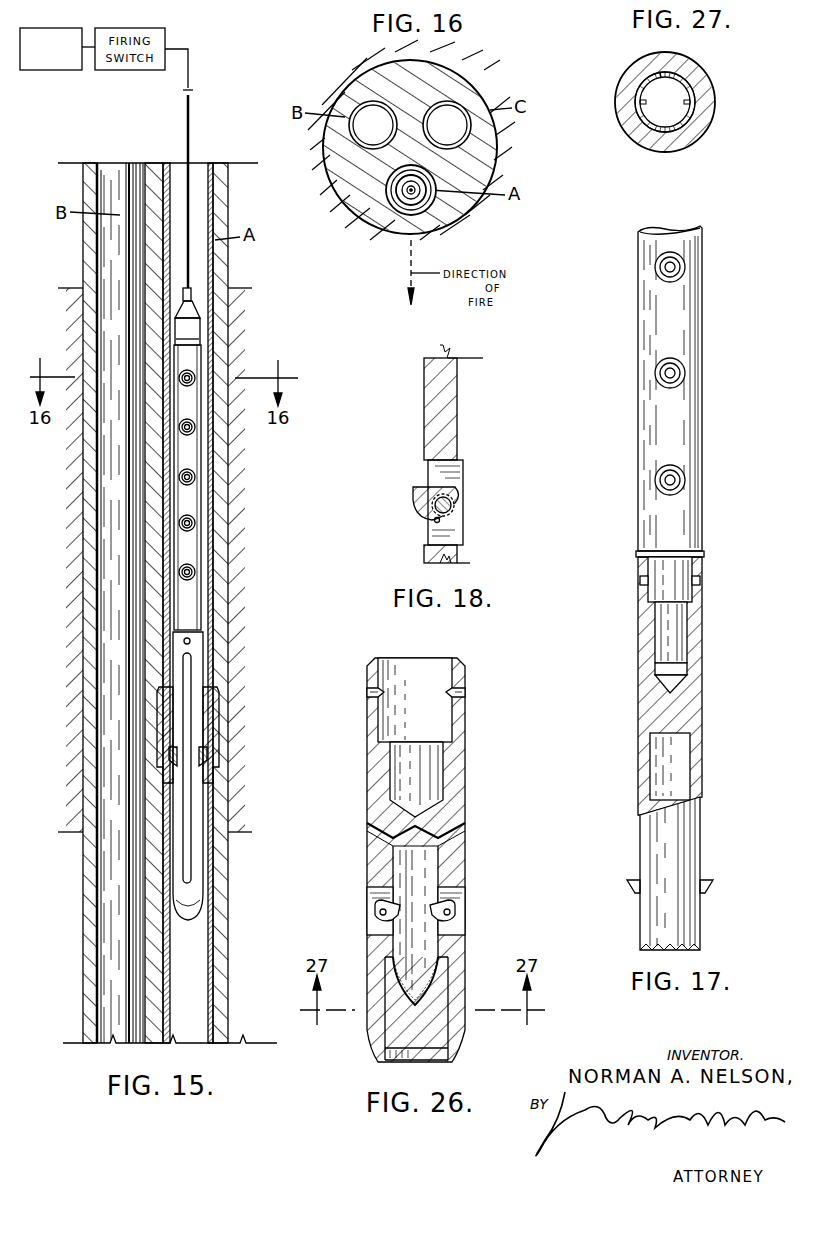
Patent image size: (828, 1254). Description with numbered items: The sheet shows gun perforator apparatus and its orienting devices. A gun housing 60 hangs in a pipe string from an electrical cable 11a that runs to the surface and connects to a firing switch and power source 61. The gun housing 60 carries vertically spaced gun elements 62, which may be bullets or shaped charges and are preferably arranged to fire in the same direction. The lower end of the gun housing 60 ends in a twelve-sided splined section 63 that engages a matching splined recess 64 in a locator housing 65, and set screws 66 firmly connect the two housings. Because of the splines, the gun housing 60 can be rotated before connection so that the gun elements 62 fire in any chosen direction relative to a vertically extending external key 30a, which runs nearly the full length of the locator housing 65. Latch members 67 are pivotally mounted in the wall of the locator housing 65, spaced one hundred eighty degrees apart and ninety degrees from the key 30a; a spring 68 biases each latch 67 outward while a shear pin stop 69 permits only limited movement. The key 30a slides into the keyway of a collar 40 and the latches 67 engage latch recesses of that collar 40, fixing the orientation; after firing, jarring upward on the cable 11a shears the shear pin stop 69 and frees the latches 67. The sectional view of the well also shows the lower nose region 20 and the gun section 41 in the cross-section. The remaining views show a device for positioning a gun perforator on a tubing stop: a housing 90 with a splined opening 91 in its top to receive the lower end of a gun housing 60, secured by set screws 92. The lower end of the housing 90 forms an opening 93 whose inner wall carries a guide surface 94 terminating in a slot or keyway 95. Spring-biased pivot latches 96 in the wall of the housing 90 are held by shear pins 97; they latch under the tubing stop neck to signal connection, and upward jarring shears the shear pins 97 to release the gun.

In FIG. 15, the firing switch and power source 61 is at (53, 62).
In FIG. 15, the electrical cable 11a is at (185, 124).
In FIG. 15, the gun housing 60 is at (259, 487).
In FIG. 16, the gun housing 60 is at (437, 202).
In FIG. 17, the gun housing 60 is at (690, 280).
In FIG. 15, the gun elements 62 is at (196, 573).
In FIG. 17, the gun elements 62 is at (668, 373).
In FIG. 15, the locator housing 65 is at (193, 667).
In FIG. 17, the locator housing 65 is at (690, 712).
In FIG. 18, the locator housing 65 is at (433, 392).
In FIG. 15, the key 30a is at (188, 818).
In FIG. 16, the key 30a is at (410, 205).
In FIG. 17, the key 30a is at (668, 826).
In FIG. 15, the collar 40 is at (215, 727).
In FIG. 15, the latch members 67 is at (206, 752).
In FIG. 17, the latch members 67 is at (710, 887).
In FIG. 18, the latch members 67 is at (418, 499).
In FIG. 15, the nose 20 is at (188, 904).
In FIG. 16, the gun section ring 41 is at (392, 200).
In FIG. 27, the housing 90 is at (700, 128).
In FIG. 26, the housing 90 is at (455, 765).
In FIG. 27, the guide surface 94 is at (648, 117).
In FIG. 26, the guide surface 94 is at (385, 982).
In FIG. 27, the slot or keyway 95 is at (660, 75).
In FIG. 27, the pivot latches 96 is at (640, 103).
In FIG. 26, the pivot latches 96 is at (440, 905).
In FIG. 17, the splined section 63 is at (665, 620).
In FIG. 17, the splined recess 64 is at (655, 665).
In FIG. 17, the set screws 66 is at (641, 580).
In FIG. 18, the spring 68 is at (460, 505).
In FIG. 18, the shear pin stop 69 is at (440, 521).
In FIG. 26, the splined opening 91 is at (408, 768).
In FIG. 26, the set screws 92 is at (465, 692).
In FIG. 26, the shear pins 97 is at (385, 915).
In FIG. 26, the opening 93 is at (415, 1040).